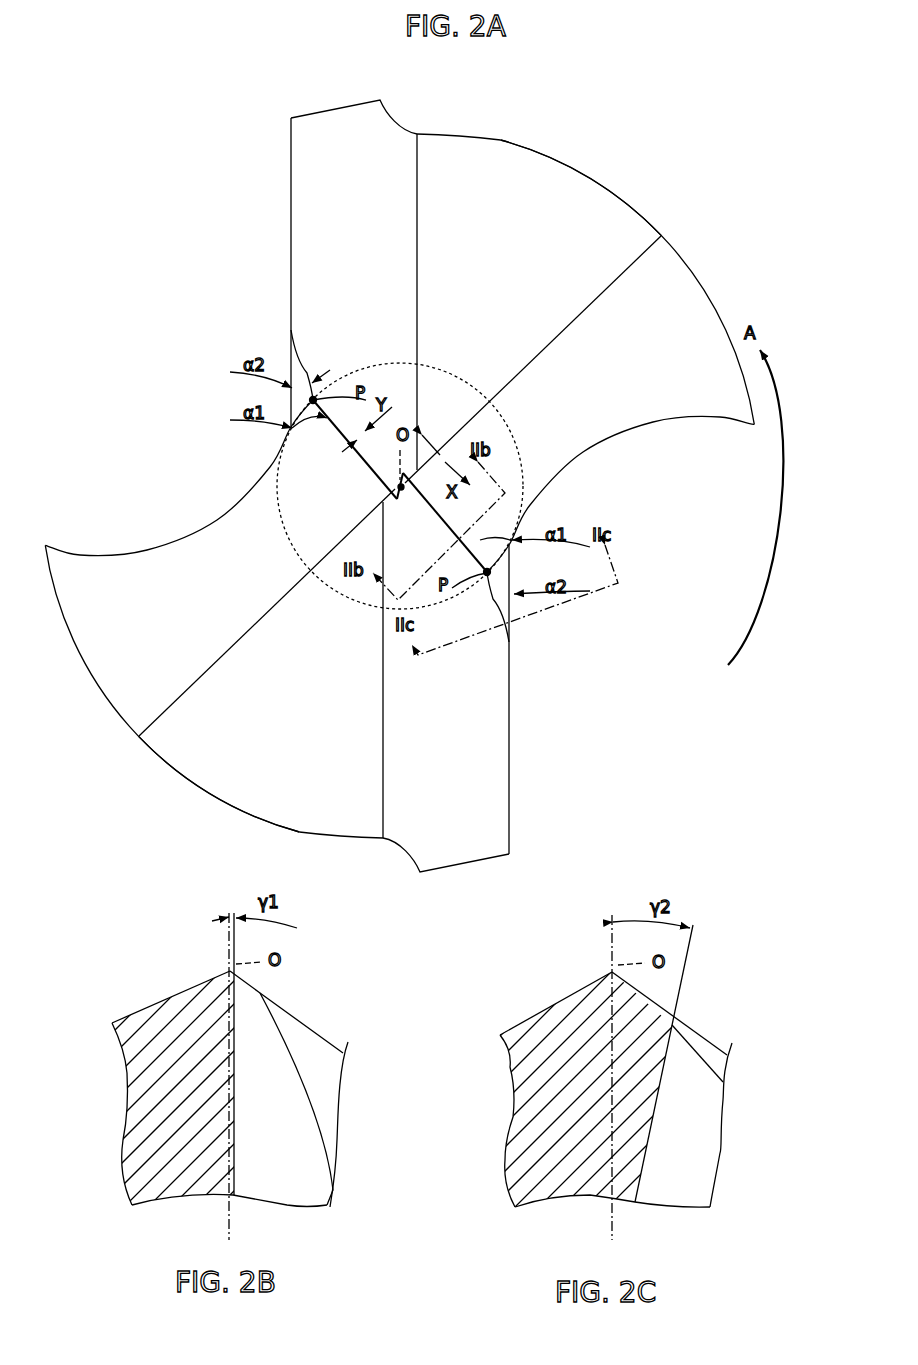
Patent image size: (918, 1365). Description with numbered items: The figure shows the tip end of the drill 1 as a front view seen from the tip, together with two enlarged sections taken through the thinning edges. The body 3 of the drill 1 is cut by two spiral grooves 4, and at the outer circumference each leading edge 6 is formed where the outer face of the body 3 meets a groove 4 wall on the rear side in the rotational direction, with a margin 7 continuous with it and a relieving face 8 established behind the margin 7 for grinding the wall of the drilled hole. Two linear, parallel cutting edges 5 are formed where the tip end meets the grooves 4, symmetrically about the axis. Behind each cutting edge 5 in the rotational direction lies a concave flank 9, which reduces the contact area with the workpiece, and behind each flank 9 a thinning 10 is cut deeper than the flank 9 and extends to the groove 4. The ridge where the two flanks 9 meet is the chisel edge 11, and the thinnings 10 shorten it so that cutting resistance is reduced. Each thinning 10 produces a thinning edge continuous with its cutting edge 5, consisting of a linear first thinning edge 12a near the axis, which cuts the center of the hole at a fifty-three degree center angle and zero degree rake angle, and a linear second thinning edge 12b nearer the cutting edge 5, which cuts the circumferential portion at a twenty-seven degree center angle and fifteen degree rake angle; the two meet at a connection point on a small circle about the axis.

In FIG. 2A, the drill 1 is at (728, 162).
In FIG. 2B, the drill 1 is at (100, 937).
In FIG. 2C, the drill 1 is at (730, 937).
In FIG. 2A, the body 3 is at (718, 235).
In FIG. 2B, the body 3 is at (105, 1003).
In FIG. 2C, the body 3 is at (722, 1007).
In FIG. 2A, the groove 4 is at (178, 542).
In FIG. 2A, the cutting edge 5 is at (291, 190).
In FIG. 2A, the leading edge 6 is at (291, 118).
In FIG. 2A, the margin 7 is at (322, 108).
In FIG. 2A, the relieving face 8 is at (513, 143).
In FIG. 2A, the flank 9 is at (547, 182).
In FIG. 2B, the flank 9 is at (330, 1095).
In FIG. 2C, the flank 9 is at (720, 1065).
In FIG. 2A, the thinning 10 is at (108, 595).
In FIG. 2B, the thinning 10 is at (320, 1178).
In FIG. 2C, the thinning 10 is at (703, 1117).
In FIG. 2A, the chisel edge 11 is at (395, 500).
In FIG. 2A, the first thinning edge 12a is at (395, 489).
In FIG. 2B, the first thinning edge 12a is at (233, 1158).
In FIG. 2A, the second thinning edge 12b is at (291, 330).
In FIG. 2C, the second thinning edge 12b is at (647, 1163).